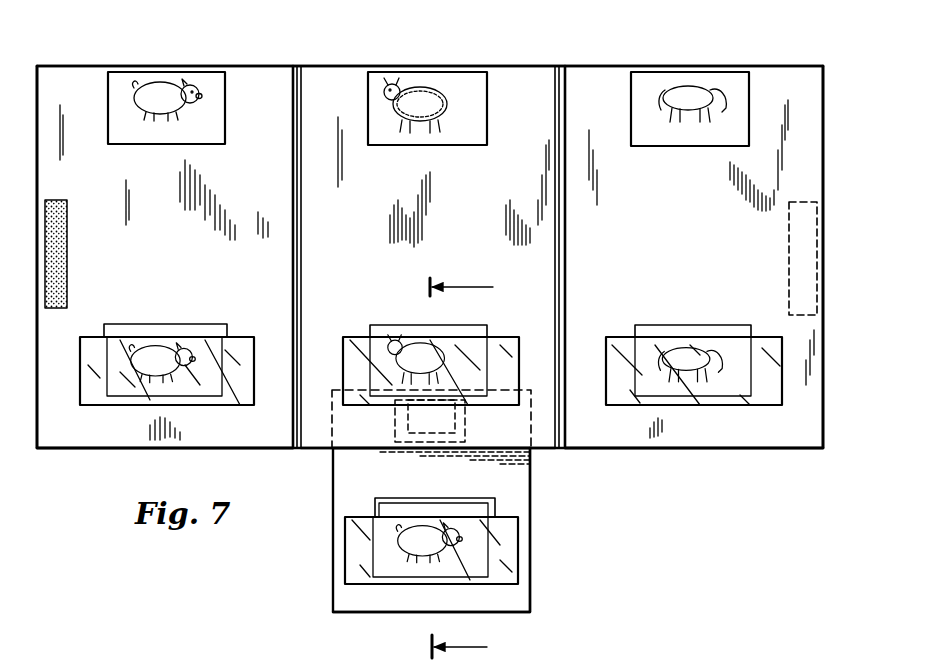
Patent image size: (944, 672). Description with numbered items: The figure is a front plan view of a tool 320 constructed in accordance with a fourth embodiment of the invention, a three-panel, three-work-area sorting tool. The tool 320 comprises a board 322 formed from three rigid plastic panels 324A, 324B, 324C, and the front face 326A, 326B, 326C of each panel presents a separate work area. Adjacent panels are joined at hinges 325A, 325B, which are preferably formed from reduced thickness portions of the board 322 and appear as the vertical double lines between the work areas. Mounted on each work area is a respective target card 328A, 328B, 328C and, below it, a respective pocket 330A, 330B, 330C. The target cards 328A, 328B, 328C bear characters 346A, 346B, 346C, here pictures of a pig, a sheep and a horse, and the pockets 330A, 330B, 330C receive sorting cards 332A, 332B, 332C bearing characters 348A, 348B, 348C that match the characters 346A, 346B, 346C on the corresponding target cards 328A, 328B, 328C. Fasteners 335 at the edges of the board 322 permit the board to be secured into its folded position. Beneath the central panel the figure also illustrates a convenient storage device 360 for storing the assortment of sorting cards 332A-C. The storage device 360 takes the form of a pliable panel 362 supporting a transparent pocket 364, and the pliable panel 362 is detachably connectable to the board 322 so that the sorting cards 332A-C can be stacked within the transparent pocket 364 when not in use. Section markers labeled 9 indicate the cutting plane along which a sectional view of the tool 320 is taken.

The tool 320 is at (510, 58).
The board 322 is at (127, 64).
The first panel 324A is at (37, 78).
The second panel 324B is at (545, 450).
The third panel 324C is at (793, 92).
The hinge 325A is at (296, 178).
The hinge 325B is at (567, 198).
The front face 326A is at (58, 428).
The front face 326B is at (320, 445).
The front face 326C is at (797, 440).
The target card 328A is at (194, 79).
The target card 328B is at (428, 109).
The target card 328C is at (708, 89).
The pocket 330A is at (167, 335).
The pocket 330B is at (418, 344).
The pocket 330C is at (694, 356).
The sorting card 332A is at (222, 327).
The sorting card 332B is at (440, 332).
The sorting card 332C is at (660, 305).
The sorting cards 332A-C is at (496, 508).
The fasteners 335 is at (67, 212).
The character 346A is at (172, 80).
The character 346B is at (426, 84).
The character 346C is at (692, 87).
The character 348A is at (142, 338).
The character 348B is at (399, 335).
The character 348C is at (705, 336).
The storage device 360 is at (438, 530).
The pliable panel 362 is at (525, 592).
The transparent pocket 364 is at (345, 532).
The section line 9- 9 is at (516, 657).